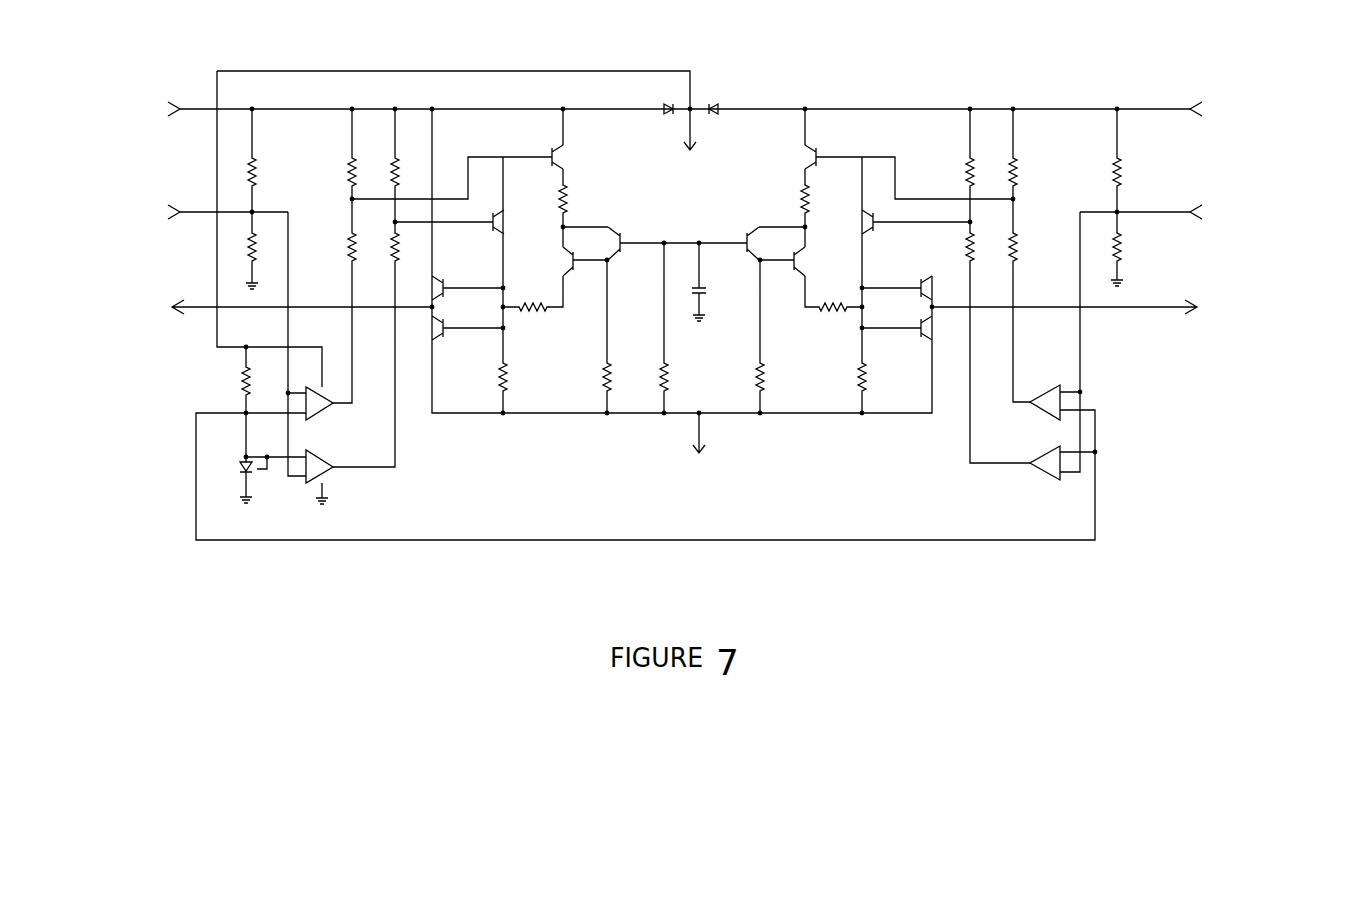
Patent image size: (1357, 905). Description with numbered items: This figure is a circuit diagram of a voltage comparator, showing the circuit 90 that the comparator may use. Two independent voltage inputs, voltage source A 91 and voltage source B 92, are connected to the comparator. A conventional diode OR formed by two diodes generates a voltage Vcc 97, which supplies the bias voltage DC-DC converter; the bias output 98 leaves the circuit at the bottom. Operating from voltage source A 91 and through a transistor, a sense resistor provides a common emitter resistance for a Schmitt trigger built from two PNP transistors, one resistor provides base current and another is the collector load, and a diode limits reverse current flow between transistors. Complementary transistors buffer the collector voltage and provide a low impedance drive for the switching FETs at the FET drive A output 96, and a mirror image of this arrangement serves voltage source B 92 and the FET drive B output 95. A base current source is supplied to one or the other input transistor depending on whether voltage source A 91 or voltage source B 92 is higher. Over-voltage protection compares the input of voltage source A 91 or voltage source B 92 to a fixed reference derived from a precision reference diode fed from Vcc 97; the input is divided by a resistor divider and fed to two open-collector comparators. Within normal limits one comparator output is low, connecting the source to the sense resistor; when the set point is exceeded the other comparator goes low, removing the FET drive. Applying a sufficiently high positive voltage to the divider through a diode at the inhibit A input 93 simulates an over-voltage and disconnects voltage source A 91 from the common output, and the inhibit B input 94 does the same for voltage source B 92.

The circuit 90 is at (688, 348).
The voltage source A input 91 is at (106, 83).
The voltage source B input 92 is at (1267, 80).
The inhibit A input 93 is at (178, 194).
The inhibit B input 94 is at (1182, 189).
The FET drive B output 95 is at (1111, 284).
The FET drive A output 96 is at (252, 289).
The voltage Vcc 97 is at (702, 146).
The bias output 98 is at (716, 464).